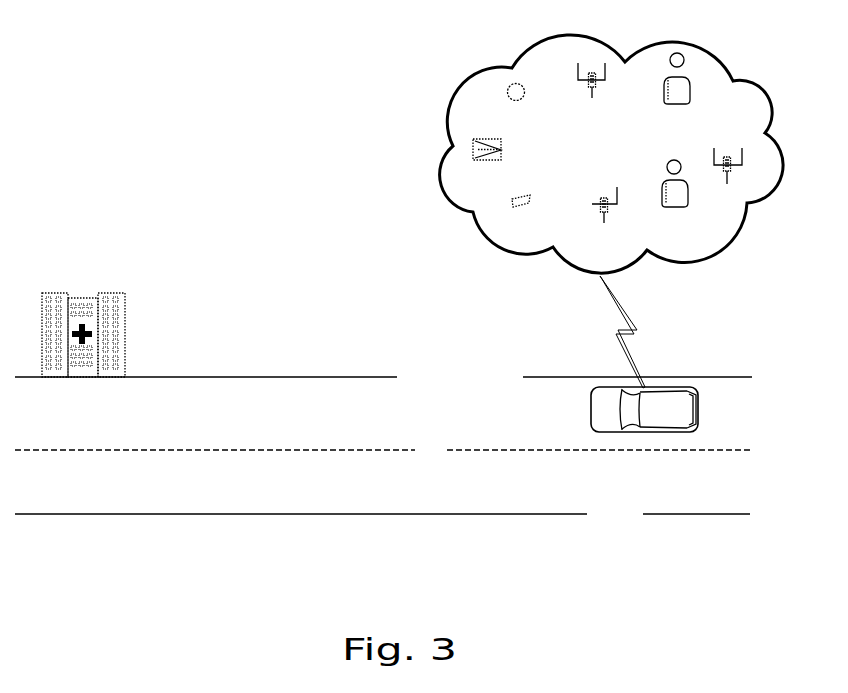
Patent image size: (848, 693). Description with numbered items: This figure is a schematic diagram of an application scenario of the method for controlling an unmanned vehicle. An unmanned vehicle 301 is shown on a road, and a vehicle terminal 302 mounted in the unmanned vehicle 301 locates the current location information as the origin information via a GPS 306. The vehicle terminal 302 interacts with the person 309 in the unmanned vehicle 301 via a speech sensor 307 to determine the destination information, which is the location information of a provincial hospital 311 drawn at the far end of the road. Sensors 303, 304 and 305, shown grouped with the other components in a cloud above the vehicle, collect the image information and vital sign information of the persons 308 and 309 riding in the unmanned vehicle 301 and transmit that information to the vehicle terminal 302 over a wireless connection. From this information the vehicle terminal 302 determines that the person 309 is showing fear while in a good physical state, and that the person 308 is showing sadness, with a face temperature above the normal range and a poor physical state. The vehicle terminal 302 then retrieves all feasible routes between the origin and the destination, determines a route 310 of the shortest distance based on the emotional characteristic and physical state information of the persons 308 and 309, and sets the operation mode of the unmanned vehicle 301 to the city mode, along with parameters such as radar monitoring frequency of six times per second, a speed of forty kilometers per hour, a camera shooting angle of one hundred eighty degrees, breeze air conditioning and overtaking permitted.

The unmanned vehicle 301 is at (675, 388).
The vehicle terminal 302 is at (487, 162).
The sensor 303 is at (591, 91).
The sensor 304 is at (613, 214).
The sensor 305 is at (728, 179).
The GPS 306 is at (518, 105).
The speech sensor 307 is at (525, 214).
The person 308 is at (679, 89).
The person 309 is at (676, 195).
The route 310 is at (308, 384).
The provincial hospital 311 is at (125, 293).